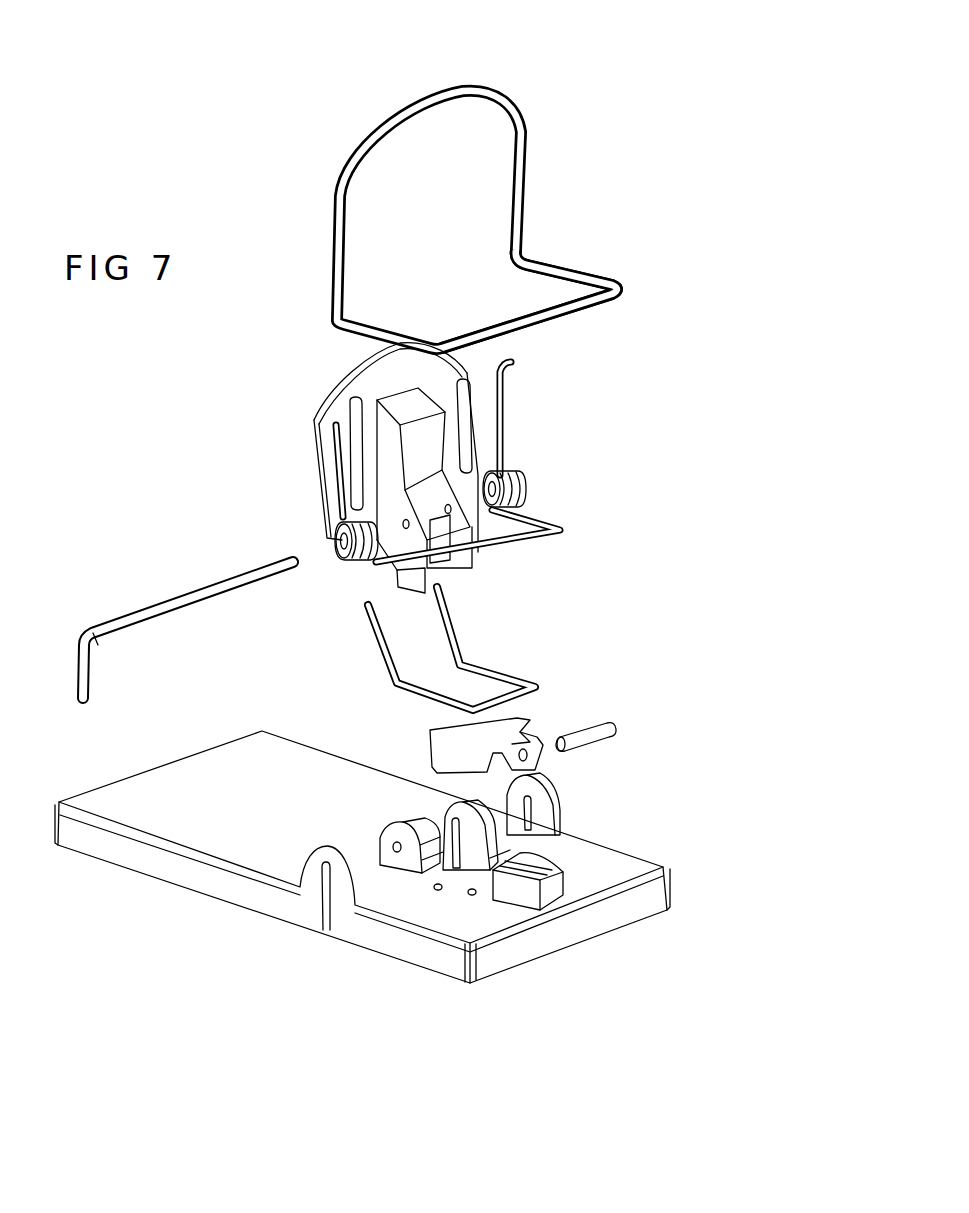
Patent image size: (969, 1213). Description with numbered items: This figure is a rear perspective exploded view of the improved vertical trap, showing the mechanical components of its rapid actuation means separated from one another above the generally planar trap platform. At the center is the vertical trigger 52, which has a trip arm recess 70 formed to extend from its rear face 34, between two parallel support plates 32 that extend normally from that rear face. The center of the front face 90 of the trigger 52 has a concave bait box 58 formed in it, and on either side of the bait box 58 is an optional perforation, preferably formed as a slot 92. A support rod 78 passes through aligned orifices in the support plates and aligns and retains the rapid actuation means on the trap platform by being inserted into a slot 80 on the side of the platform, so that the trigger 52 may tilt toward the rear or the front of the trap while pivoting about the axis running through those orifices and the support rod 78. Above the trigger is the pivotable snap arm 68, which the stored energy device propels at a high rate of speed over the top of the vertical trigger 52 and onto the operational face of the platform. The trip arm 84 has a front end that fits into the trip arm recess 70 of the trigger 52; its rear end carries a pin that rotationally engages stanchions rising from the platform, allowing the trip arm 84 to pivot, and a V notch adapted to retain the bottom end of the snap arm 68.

The support plates 32 is at (390, 507).
The rear face 34 is at (445, 373).
The vertical trigger 52 is at (333, 400).
The bait box 58 is at (415, 447).
The pivotable snap arm 68 is at (466, 84).
The trip arm recess 70 is at (437, 547).
The support rod 78 is at (138, 617).
The slot 80 is at (330, 933).
The trip arm 84 is at (523, 713).
The front face 90 is at (508, 318).
The slot 92 is at (468, 438).